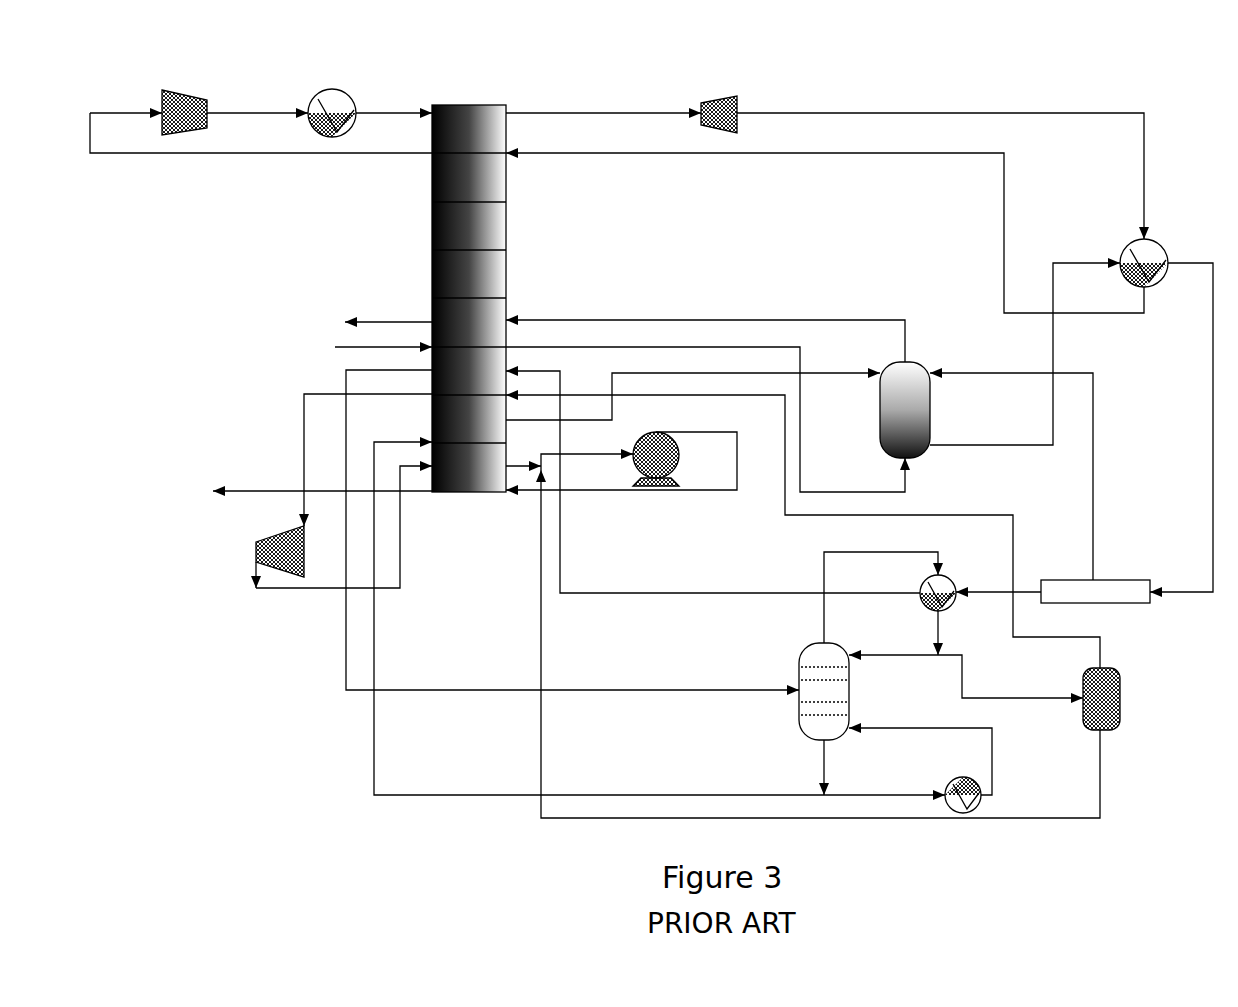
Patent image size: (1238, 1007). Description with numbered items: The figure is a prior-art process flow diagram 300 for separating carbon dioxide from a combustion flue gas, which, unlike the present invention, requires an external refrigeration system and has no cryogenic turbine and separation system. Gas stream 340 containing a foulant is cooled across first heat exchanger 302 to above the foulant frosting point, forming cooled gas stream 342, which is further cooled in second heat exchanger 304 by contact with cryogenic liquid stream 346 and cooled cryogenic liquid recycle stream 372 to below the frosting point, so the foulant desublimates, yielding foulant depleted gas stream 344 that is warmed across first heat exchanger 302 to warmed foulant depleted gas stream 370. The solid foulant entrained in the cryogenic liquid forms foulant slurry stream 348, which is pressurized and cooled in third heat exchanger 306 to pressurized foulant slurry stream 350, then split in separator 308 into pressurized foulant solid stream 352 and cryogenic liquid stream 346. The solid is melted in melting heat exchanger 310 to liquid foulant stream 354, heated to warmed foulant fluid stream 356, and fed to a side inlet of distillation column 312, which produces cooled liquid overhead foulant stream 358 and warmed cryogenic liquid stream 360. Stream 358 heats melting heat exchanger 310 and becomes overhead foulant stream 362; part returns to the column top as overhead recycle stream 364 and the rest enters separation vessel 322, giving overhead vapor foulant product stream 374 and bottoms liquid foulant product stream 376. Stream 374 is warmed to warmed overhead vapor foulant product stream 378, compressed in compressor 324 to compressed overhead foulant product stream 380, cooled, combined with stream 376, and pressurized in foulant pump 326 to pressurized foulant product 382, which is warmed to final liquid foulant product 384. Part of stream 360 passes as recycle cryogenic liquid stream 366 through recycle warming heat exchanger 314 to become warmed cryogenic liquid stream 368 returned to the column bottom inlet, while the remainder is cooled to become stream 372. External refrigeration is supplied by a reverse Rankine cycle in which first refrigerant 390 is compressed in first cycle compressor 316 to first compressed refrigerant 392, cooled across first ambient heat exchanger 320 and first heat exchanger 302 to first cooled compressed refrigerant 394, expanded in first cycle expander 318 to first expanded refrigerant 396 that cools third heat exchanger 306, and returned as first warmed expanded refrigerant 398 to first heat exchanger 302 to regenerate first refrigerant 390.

The process flow diagram 300 is at (420, 36).
The first heat exchanger 302 is at (430, 262).
The second heat exchanger 304 is at (888, 362).
The third heat exchanger 306 is at (1126, 244).
The separator 308 is at (1086, 604).
The melting heat exchanger 310 is at (952, 578).
The distillation column 312 is at (798, 650).
The recycle warming heat exchanger 314 is at (953, 778).
The first cycle compressor 316 is at (160, 90).
The first cycle expander 318 is at (706, 100).
The first ambient heat exchanger 320 is at (310, 96).
The separation vessel 322 is at (1083, 674).
The compressor 324 is at (262, 538).
The foulant pump 326 is at (648, 432).
The gas stream 340 is at (371, 347).
The cooled gas stream 342 is at (705, 411).
The foulant depleted gas stream 344 is at (705, 333).
The cryogenic liquid stream 346 is at (1011, 468).
The foulant slurry stream 348 is at (1025, 354).
The pressurized foulant slurry stream 350 is at (1181, 427).
The pressurized foulant solid stream 352 is at (998, 583).
The liquid foulant stream 354 is at (713, 482).
The warmed foulant fluid stream 356 is at (572, 530).
The cooled liquid overhead foulant stream 358 is at (881, 586).
The warmed cryogenic liquid stream 360 is at (603, 618).
The overhead foulant stream 362 is at (1010, 654).
The overhead recycle stream 364 is at (893, 645).
The recycle cryogenic liquid stream 366 is at (884, 785).
The warmed cryogenic liquid stream 368 is at (920, 751).
The warmed foulant depleted gas stream 370 is at (371, 321).
The cooled cryogenic liquid recycle stream 372 is at (693, 388).
The overhead vapor foulant product stream 374 is at (803, 531).
The bottoms liquid foulant product stream 376 is at (803, 636).
The warmed overhead vapor foulant product stream 378 is at (355, 460).
The compressed overhead foulant product stream 380 is at (344, 537).
The pressurized foulant product 382 is at (621, 461).
The final liquid foulant product 384 is at (309, 490).
The first refrigerant 390 is at (261, 133).
The first compressed refrigerant 392 is at (261, 104).
The first cooled compressed refrigerant 394 is at (603, 104).
The first expanded refrigerant 396 is at (940, 161).
The first warmed expanded refrigerant 398 is at (825, 223).